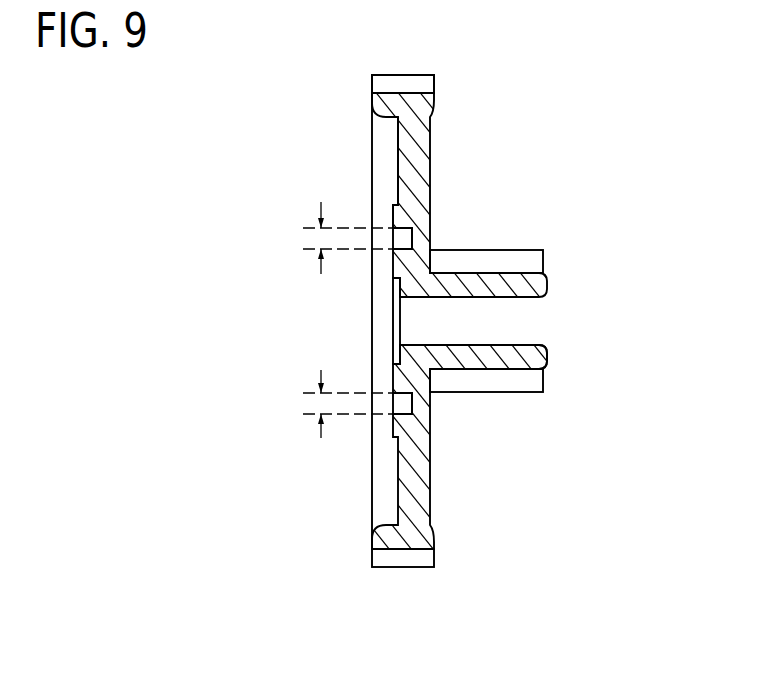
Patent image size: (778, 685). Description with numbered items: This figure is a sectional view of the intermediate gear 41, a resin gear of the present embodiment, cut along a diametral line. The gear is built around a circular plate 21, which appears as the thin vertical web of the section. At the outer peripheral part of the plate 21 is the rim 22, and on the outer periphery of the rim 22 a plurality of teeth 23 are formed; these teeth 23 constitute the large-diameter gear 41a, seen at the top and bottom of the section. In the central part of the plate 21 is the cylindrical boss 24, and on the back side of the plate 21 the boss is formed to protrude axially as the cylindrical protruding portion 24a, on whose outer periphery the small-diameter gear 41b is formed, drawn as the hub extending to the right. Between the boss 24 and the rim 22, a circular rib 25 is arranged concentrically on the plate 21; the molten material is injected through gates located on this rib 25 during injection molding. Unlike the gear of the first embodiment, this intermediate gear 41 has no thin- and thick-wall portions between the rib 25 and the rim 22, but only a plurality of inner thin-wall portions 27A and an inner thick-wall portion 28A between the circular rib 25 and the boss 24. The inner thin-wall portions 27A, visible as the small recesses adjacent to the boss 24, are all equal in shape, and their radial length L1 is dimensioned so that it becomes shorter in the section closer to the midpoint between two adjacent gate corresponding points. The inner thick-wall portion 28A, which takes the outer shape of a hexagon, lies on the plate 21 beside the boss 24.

The intermediate gear 41 is at (527, 93).
The circular plate 21 is at (433, 160).
The rim 22 is at (372, 99).
The teeth 23 is at (393, 82).
The cylindrical boss 24 is at (395, 380).
The cylindrical protruding portion 24a is at (465, 357).
The circular rib 25 is at (390, 212).
The inner thin-wall portion 27A is at (393, 234).
The inner thick-wall portion 28A is at (398, 256).
The large-diameter gear 41a is at (422, 75).
The small-diameter gear 41b is at (522, 262).
The length of inner thin-wall portion L1 is at (339, 321).